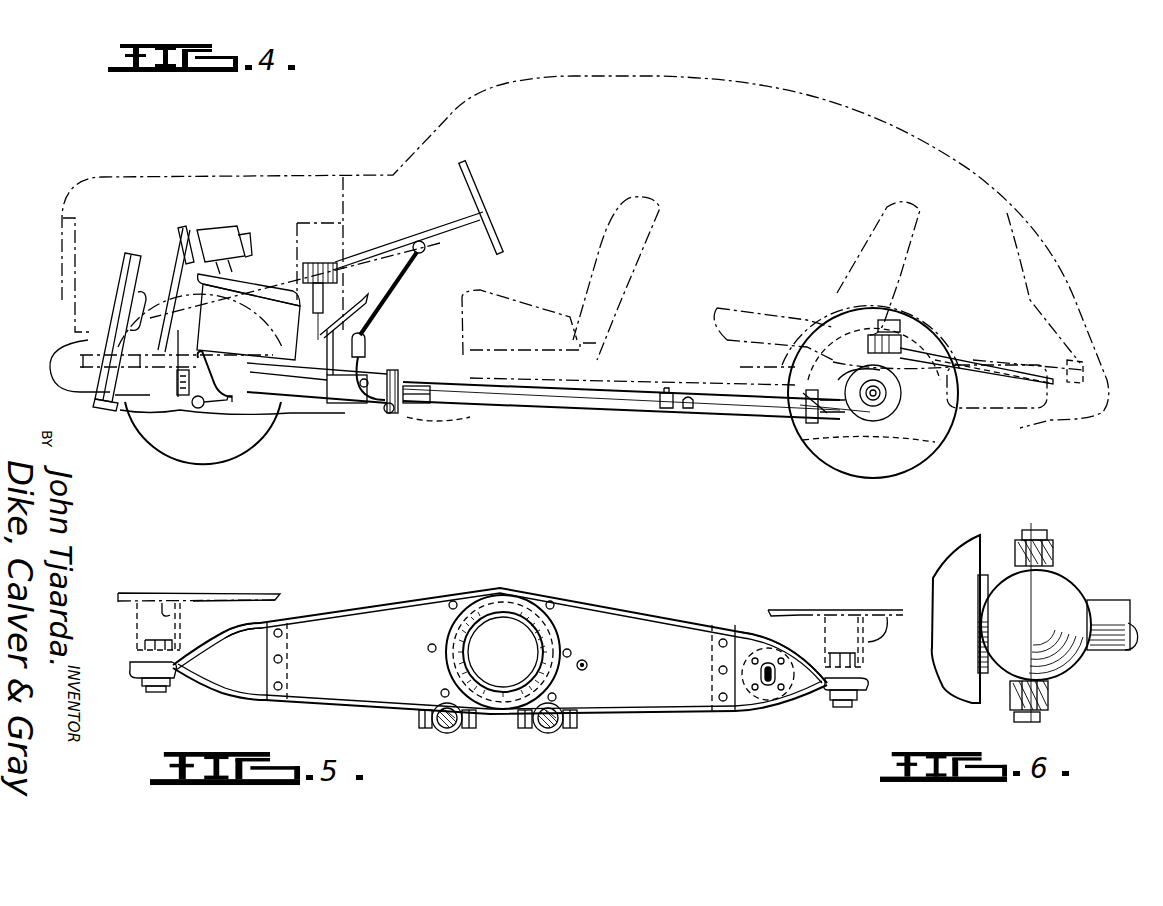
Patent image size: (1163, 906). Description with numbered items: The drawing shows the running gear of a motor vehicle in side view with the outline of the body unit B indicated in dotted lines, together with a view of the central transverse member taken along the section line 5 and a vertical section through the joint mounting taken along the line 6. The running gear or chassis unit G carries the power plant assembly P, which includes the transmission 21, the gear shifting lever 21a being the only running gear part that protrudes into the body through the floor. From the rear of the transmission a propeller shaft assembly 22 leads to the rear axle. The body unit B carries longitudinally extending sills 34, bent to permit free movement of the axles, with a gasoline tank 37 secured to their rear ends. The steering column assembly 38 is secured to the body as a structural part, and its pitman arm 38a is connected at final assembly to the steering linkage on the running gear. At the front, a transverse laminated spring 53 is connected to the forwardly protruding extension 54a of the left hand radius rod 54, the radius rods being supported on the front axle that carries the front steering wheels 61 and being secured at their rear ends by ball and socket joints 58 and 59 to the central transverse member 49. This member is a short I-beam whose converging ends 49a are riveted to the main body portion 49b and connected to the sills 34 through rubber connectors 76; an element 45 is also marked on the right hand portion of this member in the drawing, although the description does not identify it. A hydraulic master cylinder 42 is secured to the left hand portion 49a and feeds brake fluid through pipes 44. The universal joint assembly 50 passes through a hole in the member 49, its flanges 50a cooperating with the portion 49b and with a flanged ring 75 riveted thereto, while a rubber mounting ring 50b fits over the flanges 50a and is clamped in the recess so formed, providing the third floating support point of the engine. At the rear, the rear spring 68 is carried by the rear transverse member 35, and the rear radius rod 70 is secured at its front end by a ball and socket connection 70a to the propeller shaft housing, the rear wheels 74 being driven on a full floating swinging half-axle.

In FIG. 4, the body unit B is at (968, 185).
In FIG. 4, the power plant assembly P is at (244, 276).
In FIG. 4, the running gear or chassis unit G is at (632, 378).
In FIG. 4, the transmission 21 is at (370, 343).
In FIG. 6, the transmission 21 is at (950, 562).
In FIG. 4, the gear shifting lever 21a is at (412, 270).
In FIG. 4, the propeller shaft assembly 22 is at (535, 406).
In FIG. 6, the propeller shaft assembly 22 is at (1118, 608).
In FIG. 4, the longitudinal sills 34 is at (981, 346).
In FIG. 5, the longitudinal sills 34 is at (165, 590).
In FIG. 4, the rear transverse member 35 is at (895, 345).
In FIG. 4, the gasoline tank 37 is at (1018, 403).
In FIG. 4, the steering column assembly 38 is at (450, 222).
In FIG. 4, the pitman arm 38a is at (150, 387).
In FIG. 5, the hydraulic master cylinder 42 is at (776, 704).
In FIG. 5, the pipes 44 is at (588, 667).
In FIG. 5, the reinforcing plate 45 is at (765, 678).
In FIG. 4, the central transverse member 49 is at (410, 370).
In FIG. 5, the central transverse member 49 is at (622, 610).
In FIG. 6, the central transverse member 49 is at (1037, 532).
In FIG. 5, the converging ends 49a is at (259, 628).
In FIG. 5, the main body portion 49b is at (367, 597).
In FIG. 4, the universal joint assembly 50 is at (448, 420).
In FIG. 5, the universal joint assembly 50 is at (540, 648).
In FIG. 6, the universal joint assembly 50 is at (1063, 678).
In FIG. 6, the flanges of the universal joint housing 50a is at (1050, 567).
In FIG. 6, the rubber mounting ring 50b is at (1043, 709).
In FIG. 4, the transverse laminated spring 53 is at (183, 403).
In FIG. 4, the left hand radius rod 54 is at (330, 410).
In FIG. 4, the forwardly protruding extension 54a is at (397, 413).
In FIG. 5, the ball and socket joint 58 is at (556, 736).
In FIG. 5, the ball and socket joint 59 is at (447, 735).
In FIG. 4, the front steering wheels 61 is at (172, 447).
In FIG. 4, the rear spring 68 is at (872, 394).
In FIG. 4, the rear radius rod 70 is at (830, 455).
In FIG. 4, the ball and socket connection 70a is at (695, 410).
In FIG. 4, the rear wheels 74 is at (935, 442).
In FIG. 5, the flanged ring 75 is at (532, 610).
In FIG. 6, the flanged ring 75 is at (1018, 560).
In FIG. 5, the connectors 76 is at (137, 657).
In FIG. 4, the section line 5 is at (370, 342).
In FIG. 5, the section line 6 is at (530, 566).